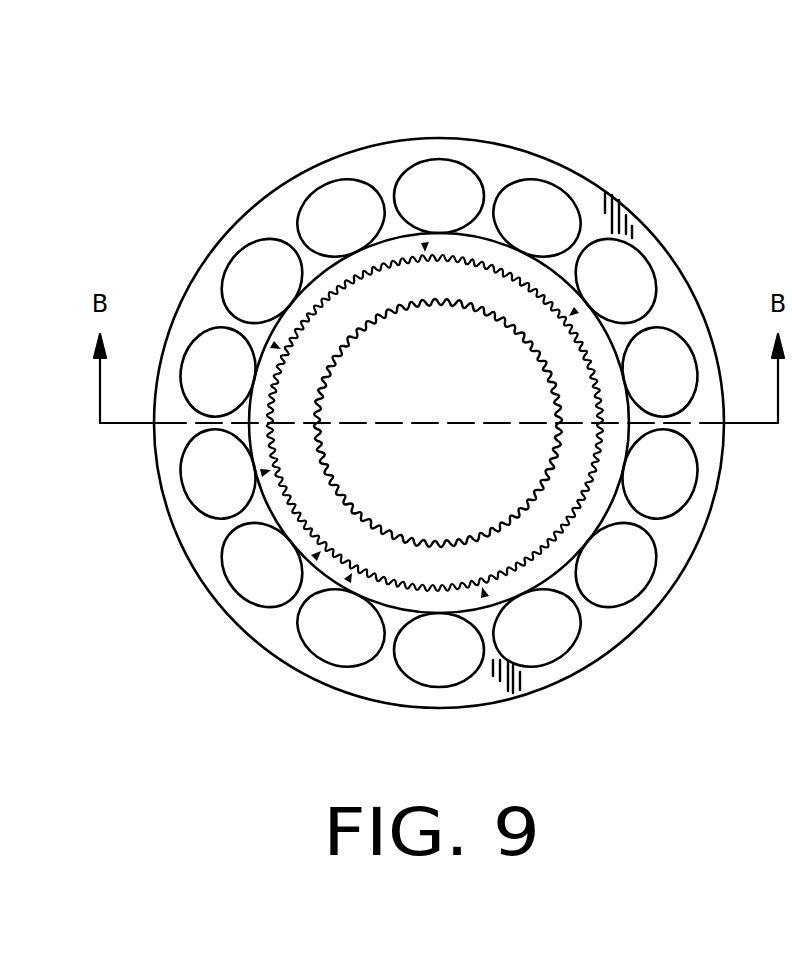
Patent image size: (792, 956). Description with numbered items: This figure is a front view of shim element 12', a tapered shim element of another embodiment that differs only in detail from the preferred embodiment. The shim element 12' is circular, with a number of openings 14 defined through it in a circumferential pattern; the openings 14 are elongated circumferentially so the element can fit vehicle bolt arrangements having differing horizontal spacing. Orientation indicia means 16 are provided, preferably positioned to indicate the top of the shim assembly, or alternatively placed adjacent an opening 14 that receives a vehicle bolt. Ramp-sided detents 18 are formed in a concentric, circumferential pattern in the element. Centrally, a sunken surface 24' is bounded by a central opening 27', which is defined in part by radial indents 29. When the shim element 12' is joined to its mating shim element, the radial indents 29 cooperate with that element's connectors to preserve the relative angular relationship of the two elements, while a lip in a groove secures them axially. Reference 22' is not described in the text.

The shim element 12' is at (439, 366).
The openings 14 is at (474, 163).
The shim assembly orientation indicia means 16 is at (667, 240).
The ramp-sided detents 18 is at (397, 240).
The sunken surface 24' is at (436, 423).
The central opening 27' is at (438, 423).
The gear ring 22' is at (438, 423).
The radial indents 29 is at (322, 398).